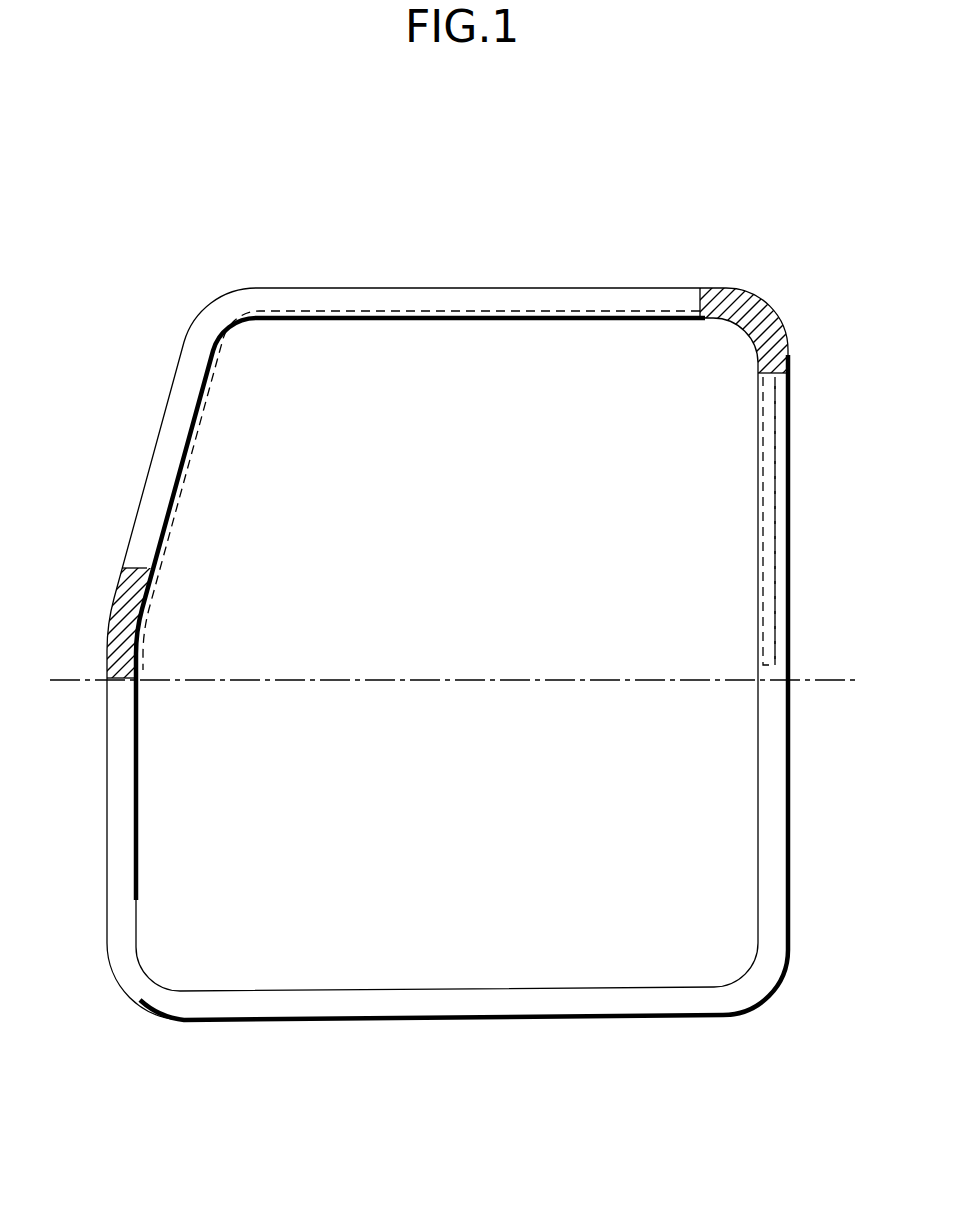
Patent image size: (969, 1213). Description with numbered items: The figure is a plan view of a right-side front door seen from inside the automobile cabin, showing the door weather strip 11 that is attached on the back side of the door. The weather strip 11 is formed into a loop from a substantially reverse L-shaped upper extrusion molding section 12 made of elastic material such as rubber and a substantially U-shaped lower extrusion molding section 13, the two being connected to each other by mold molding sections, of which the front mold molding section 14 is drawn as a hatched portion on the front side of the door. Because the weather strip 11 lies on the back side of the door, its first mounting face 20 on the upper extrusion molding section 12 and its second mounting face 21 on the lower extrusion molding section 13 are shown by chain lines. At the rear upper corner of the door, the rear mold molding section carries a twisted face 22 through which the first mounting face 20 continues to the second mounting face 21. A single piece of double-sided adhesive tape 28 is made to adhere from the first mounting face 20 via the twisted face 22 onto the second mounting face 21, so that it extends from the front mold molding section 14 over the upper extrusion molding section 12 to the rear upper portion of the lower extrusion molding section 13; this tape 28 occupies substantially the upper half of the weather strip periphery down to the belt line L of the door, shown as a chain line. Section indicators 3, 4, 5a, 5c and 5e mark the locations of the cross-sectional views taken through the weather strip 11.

The weather strip 11 is at (372, 250).
The upper extrusion molding section 12 is at (448, 300).
The lower extrusion molding section 13 is at (790, 768).
The front mold molding section 14 is at (122, 610).
The first mounting face 20 is at (305, 322).
The second mounting face 21 is at (758, 466).
The twisted face 22 is at (783, 334).
The double-sided adhesive tape 28 is at (760, 513).
The section line 3- 3 is at (543, 390).
The section line 4- 4 is at (858, 557).
The section line 5a- 5a is at (722, 347).
The section line 5c- 5c is at (768, 300).
The section line 5e- 5e is at (860, 363).
The belt line L is at (462, 683).